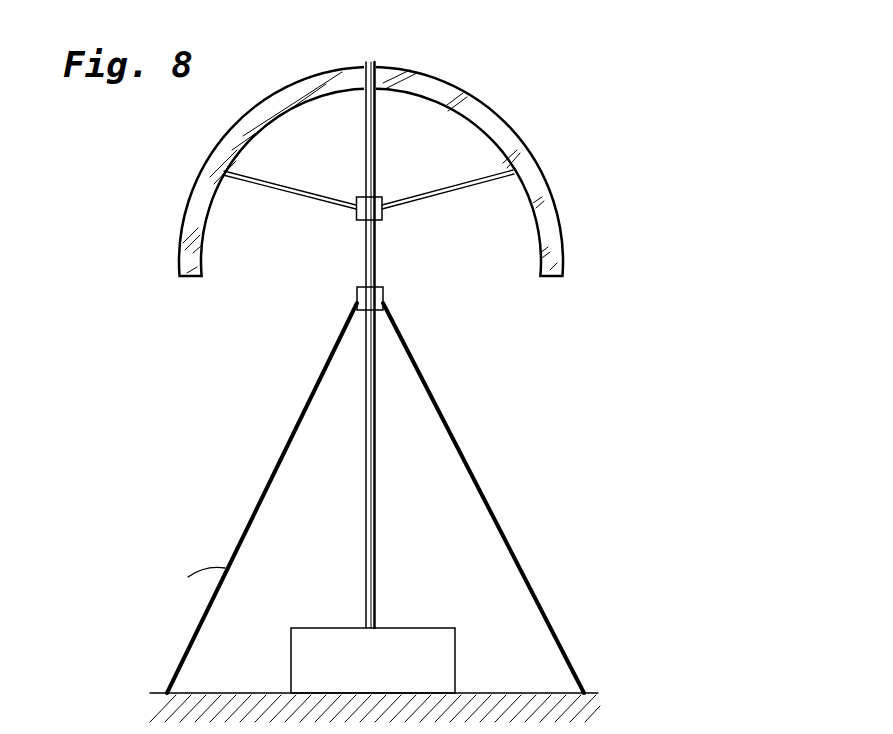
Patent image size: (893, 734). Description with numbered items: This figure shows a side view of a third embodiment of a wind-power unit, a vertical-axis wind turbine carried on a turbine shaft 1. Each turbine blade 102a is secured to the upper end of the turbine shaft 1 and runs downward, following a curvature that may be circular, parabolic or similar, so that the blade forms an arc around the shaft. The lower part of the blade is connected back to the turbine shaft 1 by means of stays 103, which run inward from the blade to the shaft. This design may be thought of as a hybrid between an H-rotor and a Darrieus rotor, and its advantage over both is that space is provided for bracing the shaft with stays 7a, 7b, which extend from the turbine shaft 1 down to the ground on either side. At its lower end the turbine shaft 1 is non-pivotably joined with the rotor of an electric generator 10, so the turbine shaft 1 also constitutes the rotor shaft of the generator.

The turbine blade 102a is at (200, 208).
The stays 103 is at (282, 193).
The turbine shaft 1 is at (377, 262).
The stay 7a is at (283, 447).
The stay 7b is at (460, 443).
The electric generator 10 is at (425, 642).